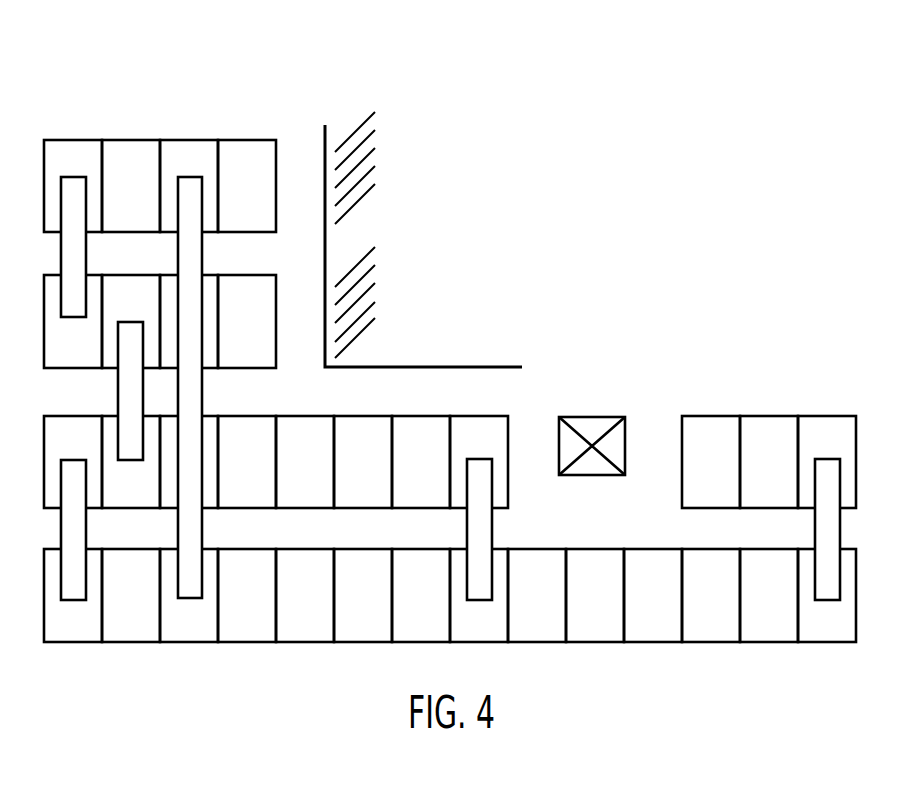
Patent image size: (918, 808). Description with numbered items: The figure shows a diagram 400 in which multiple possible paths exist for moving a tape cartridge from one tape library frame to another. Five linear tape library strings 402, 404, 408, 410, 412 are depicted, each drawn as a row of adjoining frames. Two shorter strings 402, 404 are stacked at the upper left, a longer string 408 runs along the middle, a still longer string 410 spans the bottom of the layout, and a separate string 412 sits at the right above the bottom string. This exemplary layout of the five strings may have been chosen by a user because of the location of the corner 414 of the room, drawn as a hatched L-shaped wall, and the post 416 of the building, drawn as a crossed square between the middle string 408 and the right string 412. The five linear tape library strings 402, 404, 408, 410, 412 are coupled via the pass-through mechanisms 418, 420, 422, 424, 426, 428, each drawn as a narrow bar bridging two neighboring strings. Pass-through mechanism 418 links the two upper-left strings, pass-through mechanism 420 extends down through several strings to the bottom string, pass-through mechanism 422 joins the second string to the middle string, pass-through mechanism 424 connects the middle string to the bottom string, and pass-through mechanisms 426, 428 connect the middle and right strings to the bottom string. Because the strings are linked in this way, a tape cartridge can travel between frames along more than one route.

The diagram 400 is at (507, 110).
The linear tape library string 402 is at (141, 138).
The linear tape library string 404 is at (232, 273).
The linear tape library string 408 is at (302, 415).
The linear tape library string 410 is at (313, 547).
The linear tape library string 412 is at (768, 415).
The corner of the room 414 is at (497, 250).
The post of the building 416 is at (598, 460).
The pass-through mechanism 418 is at (86, 258).
The pass-through mechanism 420 is at (202, 396).
The pass-through mechanism 422 is at (117, 395).
The pass-through mechanism 424 is at (86, 533).
The pass-through mechanism 426 is at (493, 529).
The pass-through mechanism 428 is at (814, 533).